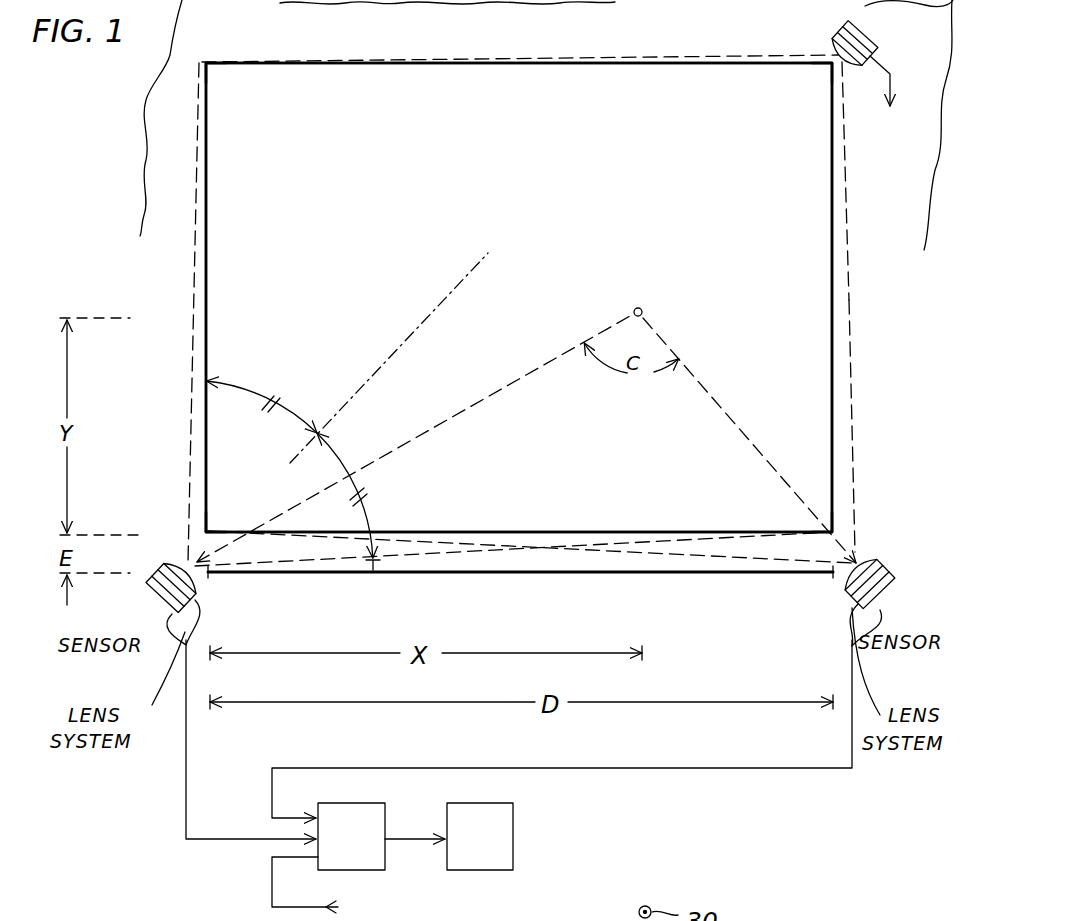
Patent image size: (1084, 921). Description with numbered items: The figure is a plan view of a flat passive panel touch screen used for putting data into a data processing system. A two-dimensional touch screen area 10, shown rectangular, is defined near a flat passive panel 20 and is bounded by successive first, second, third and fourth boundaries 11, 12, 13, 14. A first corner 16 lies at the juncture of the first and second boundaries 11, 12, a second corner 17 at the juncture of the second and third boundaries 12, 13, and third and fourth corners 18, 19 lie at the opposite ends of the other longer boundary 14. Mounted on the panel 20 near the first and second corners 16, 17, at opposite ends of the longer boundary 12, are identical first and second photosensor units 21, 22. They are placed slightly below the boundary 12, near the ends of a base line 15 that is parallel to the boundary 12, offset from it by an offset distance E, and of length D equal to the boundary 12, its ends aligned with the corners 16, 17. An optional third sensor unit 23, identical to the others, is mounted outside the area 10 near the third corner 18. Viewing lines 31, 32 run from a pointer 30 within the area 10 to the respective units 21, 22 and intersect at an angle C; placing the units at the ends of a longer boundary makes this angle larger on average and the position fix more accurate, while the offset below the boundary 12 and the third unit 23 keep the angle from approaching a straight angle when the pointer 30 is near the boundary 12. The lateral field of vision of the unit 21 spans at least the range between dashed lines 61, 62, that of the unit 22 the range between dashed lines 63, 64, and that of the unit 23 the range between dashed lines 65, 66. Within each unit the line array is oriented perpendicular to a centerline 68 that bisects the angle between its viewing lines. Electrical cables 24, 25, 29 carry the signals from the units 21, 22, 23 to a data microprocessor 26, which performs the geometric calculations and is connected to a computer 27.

The two-dimensional touch screen area 10 is at (258, 148).
The first boundary 11 is at (210, 300).
The second boundary 12 is at (515, 532).
The third boundary 13 is at (830, 250).
The fourth boundary 14 is at (472, 66).
The base line 15 is at (507, 574).
The first corner 16 is at (213, 530).
The second corner 17 is at (830, 530).
The third corner 18 is at (827, 68).
The fourth corner 19 is at (210, 68).
The flat passive panel 20 is at (176, 64).
The first photosensor unit 21 is at (146, 594).
The second photosensor unit 22 is at (890, 590).
The third sensor unit 23 is at (871, 33).
The electrical cable 24 is at (186, 808).
The electrical cable 25 is at (630, 770).
The data microprocessor 26 is at (370, 803).
The computer 27 is at (495, 803).
The electrical cable 29 is at (896, 84).
The pointer 30 is at (643, 313).
The viewing line 31 is at (530, 378).
The viewing line 32 is at (706, 388).
The dashed line 61 is at (197, 386).
The dashed line 62 is at (377, 572).
The dashed line 63 is at (854, 402).
The dashed line 64 is at (645, 574).
The dashed line 65 is at (850, 352).
The dashed line 66 is at (645, 55).
The centerline 68 is at (370, 378).